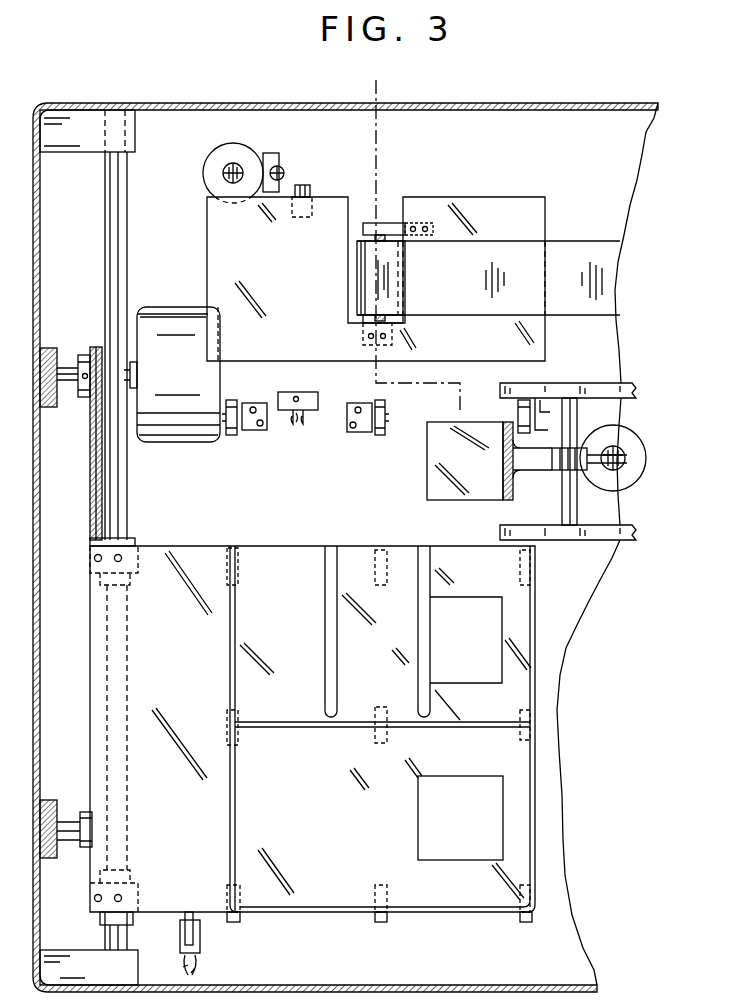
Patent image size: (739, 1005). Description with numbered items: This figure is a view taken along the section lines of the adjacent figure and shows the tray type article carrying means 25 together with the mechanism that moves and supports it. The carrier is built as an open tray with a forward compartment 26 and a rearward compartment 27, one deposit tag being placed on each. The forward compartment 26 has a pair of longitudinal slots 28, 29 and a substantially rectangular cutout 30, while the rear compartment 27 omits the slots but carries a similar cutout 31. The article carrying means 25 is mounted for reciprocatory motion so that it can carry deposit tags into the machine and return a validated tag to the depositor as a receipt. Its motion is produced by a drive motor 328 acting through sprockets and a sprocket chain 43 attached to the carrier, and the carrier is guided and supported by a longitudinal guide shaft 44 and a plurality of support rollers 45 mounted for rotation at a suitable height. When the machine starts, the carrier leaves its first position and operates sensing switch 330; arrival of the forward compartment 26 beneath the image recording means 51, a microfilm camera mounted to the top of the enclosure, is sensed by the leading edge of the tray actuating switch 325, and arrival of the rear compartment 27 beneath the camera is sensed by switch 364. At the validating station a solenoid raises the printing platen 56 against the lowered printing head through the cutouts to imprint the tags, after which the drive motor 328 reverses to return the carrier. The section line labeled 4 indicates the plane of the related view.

The section line 4- 4 is at (387, 88).
The article carrying means 25 is at (318, 913).
The forward compartment 26 is at (292, 644).
The rearward compartment 27 is at (329, 832).
The longitudinal slot 28 is at (331, 546).
The longitudinal slot 29 is at (424, 546).
The rectangular cutout 30 is at (497, 622).
The cutout 31 is at (508, 819).
The sprocket chain 43 is at (90, 451).
The longitudinal guide shaft 44 is at (108, 229).
The support roller 45 is at (237, 435).
The image recording means 51 is at (646, 458).
The printing platen 56 is at (474, 472).
The switch 325 is at (318, 418).
The drive motor 328 is at (196, 395).
The sensing switch 330 is at (200, 945).
The switch 364 is at (303, 185).